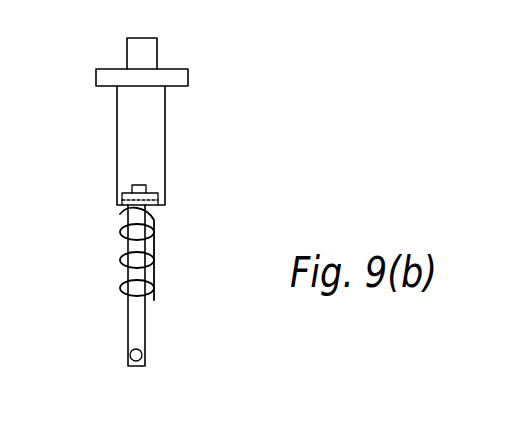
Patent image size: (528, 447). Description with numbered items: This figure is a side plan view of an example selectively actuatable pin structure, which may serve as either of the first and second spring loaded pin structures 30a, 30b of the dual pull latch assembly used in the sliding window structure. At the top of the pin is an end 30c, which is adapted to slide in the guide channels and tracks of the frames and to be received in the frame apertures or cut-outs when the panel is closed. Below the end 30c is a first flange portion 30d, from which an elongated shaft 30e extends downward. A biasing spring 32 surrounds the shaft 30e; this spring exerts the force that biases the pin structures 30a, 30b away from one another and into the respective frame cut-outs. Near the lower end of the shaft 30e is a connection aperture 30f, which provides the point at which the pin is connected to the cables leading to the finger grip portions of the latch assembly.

The first spring loaded pin structure 30a is at (218, 145).
The second spring loaded pin structure 30b is at (141, 145).
The end 30c is at (142, 38).
The first flange portion 30d is at (176, 78).
The shaft 30e is at (140, 327).
The connection aperture 30f is at (127, 345).
The biasing spring 32 is at (157, 247).